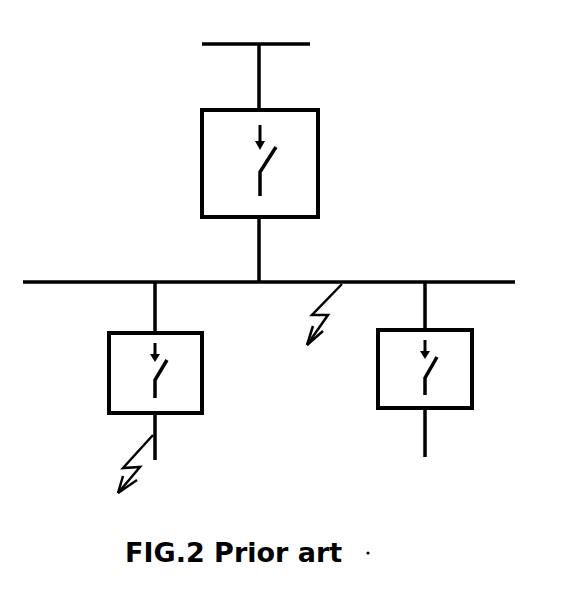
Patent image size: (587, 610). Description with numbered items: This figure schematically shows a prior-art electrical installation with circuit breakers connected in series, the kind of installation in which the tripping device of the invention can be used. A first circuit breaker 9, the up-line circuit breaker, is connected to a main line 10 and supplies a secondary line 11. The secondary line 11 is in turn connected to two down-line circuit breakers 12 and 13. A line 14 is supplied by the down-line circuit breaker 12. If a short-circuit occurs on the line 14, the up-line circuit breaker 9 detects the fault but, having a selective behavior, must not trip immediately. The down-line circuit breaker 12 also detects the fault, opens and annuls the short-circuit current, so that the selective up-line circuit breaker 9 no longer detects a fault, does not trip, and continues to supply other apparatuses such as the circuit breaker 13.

The first circuit breaker 9 is at (318, 167).
The main line 10 is at (283, 45).
The secondary line 11 is at (312, 283).
The down-line circuit breaker 12 is at (202, 383).
The down-line circuit breaker 13 is at (472, 381).
The line 14 is at (157, 452).